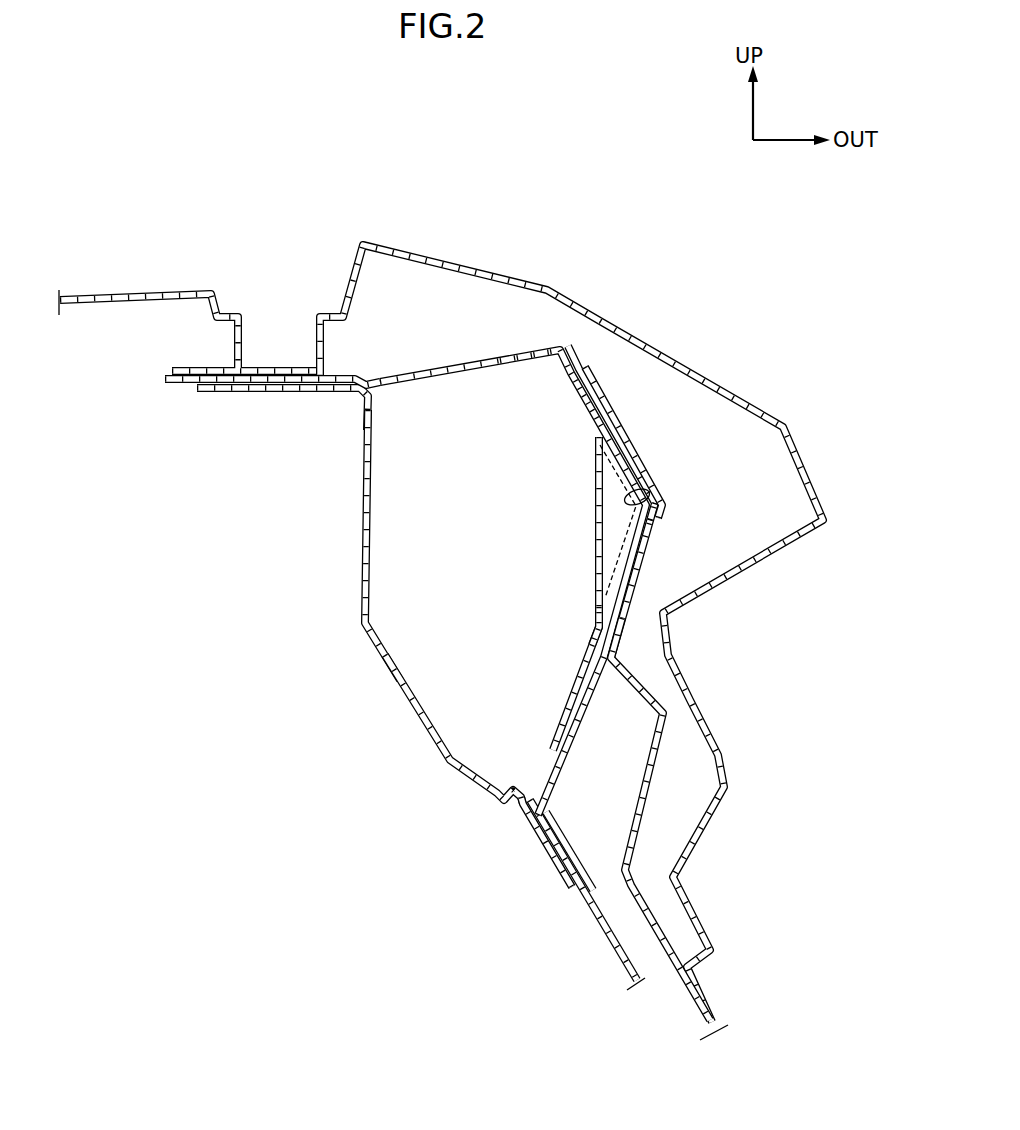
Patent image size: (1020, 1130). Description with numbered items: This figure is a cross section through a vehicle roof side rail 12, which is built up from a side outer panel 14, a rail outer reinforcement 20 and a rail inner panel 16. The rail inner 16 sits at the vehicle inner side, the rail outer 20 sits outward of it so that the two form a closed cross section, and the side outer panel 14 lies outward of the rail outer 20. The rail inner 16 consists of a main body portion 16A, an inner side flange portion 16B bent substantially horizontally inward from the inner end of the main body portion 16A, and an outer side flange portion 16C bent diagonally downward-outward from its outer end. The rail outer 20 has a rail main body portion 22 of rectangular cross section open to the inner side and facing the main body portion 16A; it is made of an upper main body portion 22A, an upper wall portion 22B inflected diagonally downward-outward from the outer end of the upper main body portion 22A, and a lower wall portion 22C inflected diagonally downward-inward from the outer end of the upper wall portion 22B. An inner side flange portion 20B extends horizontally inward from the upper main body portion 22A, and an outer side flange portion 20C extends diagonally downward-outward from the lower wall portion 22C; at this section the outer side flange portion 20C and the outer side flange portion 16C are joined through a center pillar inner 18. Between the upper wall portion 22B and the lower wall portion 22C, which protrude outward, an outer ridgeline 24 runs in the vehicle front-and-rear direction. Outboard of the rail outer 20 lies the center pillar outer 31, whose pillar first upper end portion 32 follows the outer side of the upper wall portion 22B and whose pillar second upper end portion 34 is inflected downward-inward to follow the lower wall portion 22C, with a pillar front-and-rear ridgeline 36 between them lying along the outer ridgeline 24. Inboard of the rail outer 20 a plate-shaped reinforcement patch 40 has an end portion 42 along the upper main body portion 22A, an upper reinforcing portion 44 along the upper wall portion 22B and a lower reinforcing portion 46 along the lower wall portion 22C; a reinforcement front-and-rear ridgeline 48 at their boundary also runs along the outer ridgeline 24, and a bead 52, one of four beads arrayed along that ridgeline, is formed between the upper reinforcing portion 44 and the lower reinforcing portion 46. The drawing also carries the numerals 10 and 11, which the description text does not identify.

The vehicle side portion structure 10 is at (567, 148).
The floor panel 11 is at (135, 292).
The roof side rail 12 is at (549, 290).
The side outer panel 14 is at (662, 348).
The rail inner panel 16 is at (361, 523).
The main body portion 16A is at (360, 598).
The inner side flange portion 16B is at (223, 394).
The outer side flange portion 16C is at (552, 857).
The center pillar inner 18 is at (611, 950).
The rail outer reinforcement 20 is at (575, 351).
The inner side flange portion 20B is at (177, 386).
The outer side flange portion 20C is at (561, 830).
The rail main body portion 22 is at (420, 376).
The upper main body portion 22A is at (407, 384).
The upper wall portion 22B is at (591, 427).
The lower wall portion 22C is at (550, 783).
The outer ridgeline 24 is at (648, 492).
The center pillar outer 31 is at (657, 753).
The pillar first upper end portion 32 is at (612, 397).
The pillar second upper end portion 34 is at (651, 556).
The pillar front-and-rear ridgeline 36 is at (668, 507).
The reinforcement patch 40 is at (597, 624).
The end portion 42 is at (520, 364).
The upper reinforcing portion 44 is at (580, 405).
The lower reinforcing portion 46 is at (570, 697).
The reinforcement front-and-rear ridgeline 48 is at (665, 518).
The bead 52 is at (595, 540).